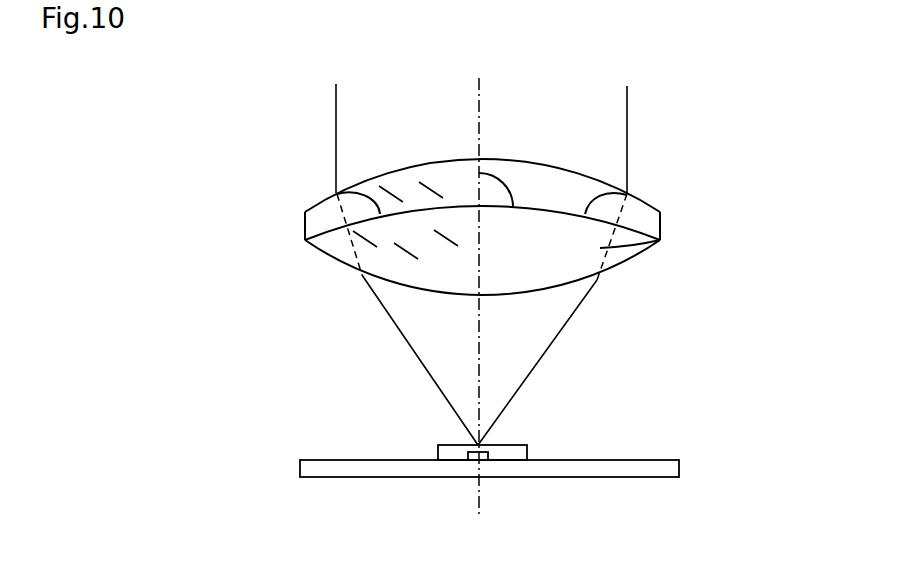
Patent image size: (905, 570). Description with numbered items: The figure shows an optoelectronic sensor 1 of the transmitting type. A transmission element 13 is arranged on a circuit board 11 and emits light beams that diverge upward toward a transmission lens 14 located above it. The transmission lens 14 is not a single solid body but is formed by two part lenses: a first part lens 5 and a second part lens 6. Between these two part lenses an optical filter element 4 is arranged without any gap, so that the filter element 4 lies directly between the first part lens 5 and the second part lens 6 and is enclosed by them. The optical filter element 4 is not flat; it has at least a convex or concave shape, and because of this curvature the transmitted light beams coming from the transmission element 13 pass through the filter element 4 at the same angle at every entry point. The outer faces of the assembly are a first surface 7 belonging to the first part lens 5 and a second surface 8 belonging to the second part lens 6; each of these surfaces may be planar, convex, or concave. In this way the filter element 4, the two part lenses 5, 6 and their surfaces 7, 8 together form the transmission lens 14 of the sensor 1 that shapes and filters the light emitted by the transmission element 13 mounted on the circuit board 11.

The optoelectronic sensor 1 is at (719, 115).
The optical filter element 4 is at (547, 206).
The first part lens 5 is at (642, 208).
The second part lens 6 is at (632, 252).
The first surface 7 is at (424, 160).
The second surface 8 is at (333, 267).
The circuit board 11 is at (628, 470).
The transmission element 13 is at (472, 458).
The transmission lens 14 is at (275, 217).